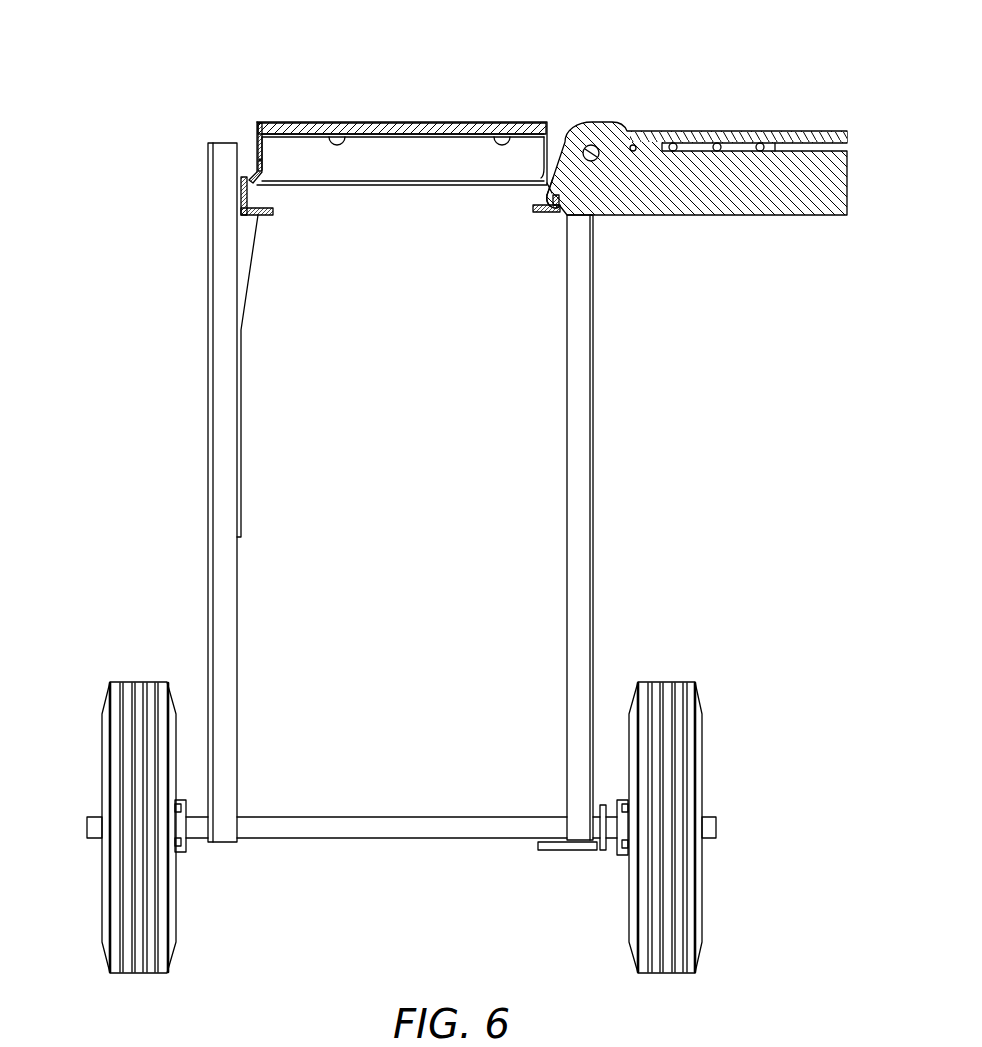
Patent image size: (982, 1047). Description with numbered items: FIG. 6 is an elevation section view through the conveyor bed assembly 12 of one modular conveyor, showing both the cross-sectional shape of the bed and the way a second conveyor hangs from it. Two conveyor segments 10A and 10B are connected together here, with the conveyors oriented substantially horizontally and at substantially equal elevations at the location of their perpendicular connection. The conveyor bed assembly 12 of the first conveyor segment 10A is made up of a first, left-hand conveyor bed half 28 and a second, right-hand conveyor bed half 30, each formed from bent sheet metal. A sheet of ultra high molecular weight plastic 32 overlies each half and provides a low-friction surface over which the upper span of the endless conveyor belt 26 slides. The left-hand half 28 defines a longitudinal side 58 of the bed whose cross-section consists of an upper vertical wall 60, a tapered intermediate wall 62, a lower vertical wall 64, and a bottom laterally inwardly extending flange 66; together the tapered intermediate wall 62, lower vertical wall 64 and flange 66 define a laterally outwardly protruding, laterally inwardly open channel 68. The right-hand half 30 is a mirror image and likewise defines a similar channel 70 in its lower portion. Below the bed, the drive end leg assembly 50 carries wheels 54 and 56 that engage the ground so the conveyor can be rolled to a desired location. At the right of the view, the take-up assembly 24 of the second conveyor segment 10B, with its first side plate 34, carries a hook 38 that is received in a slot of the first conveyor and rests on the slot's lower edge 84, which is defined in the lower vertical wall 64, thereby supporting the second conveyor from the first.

The conveyor segment 10A is at (182, 278).
The conveyor segment 10B is at (689, 180).
The conveyor bed assembly 12 is at (176, 126).
The take-up assembly 24 is at (697, 192).
The endless conveyor belt 26 is at (383, 122).
The first conveyor bed half 28 is at (350, 134).
The second conveyor bed half 30 is at (511, 140).
The sheet of ultra high molecular weight plastic 32 is at (300, 127).
The first side plate 34 is at (680, 200).
The hook 38 is at (538, 210).
The drive end leg assembly 50 is at (582, 598).
The wheel 54 is at (686, 941).
The wheel 56 is at (106, 913).
The longitudinal side 58 is at (182, 146).
The upper vertical wall 60 is at (258, 158).
The tapered intermediate wall 62 is at (250, 175).
The lower vertical wall 64 is at (241, 192).
The bottom laterally inwardly extending flange 66 is at (264, 216).
The laterally outwardly protruding laterally inwardly open channel 68 is at (278, 197).
The laterally outwardly protruding laterally inwardly open channel 70 is at (524, 198).
The lower edge 84 is at (580, 198).